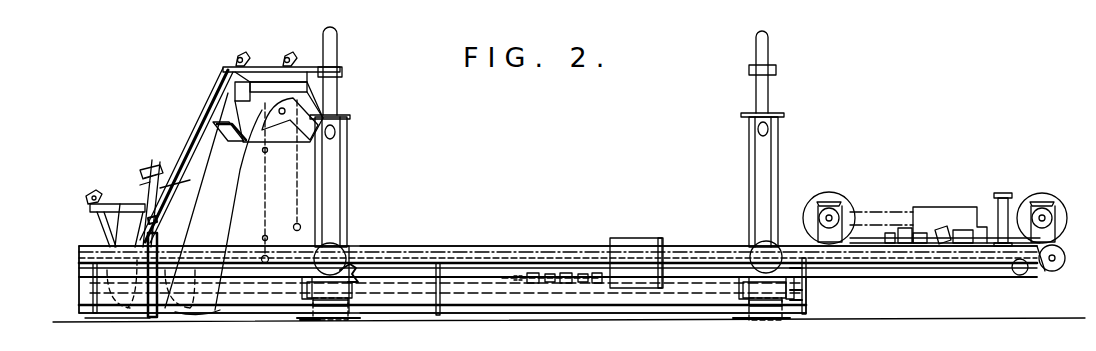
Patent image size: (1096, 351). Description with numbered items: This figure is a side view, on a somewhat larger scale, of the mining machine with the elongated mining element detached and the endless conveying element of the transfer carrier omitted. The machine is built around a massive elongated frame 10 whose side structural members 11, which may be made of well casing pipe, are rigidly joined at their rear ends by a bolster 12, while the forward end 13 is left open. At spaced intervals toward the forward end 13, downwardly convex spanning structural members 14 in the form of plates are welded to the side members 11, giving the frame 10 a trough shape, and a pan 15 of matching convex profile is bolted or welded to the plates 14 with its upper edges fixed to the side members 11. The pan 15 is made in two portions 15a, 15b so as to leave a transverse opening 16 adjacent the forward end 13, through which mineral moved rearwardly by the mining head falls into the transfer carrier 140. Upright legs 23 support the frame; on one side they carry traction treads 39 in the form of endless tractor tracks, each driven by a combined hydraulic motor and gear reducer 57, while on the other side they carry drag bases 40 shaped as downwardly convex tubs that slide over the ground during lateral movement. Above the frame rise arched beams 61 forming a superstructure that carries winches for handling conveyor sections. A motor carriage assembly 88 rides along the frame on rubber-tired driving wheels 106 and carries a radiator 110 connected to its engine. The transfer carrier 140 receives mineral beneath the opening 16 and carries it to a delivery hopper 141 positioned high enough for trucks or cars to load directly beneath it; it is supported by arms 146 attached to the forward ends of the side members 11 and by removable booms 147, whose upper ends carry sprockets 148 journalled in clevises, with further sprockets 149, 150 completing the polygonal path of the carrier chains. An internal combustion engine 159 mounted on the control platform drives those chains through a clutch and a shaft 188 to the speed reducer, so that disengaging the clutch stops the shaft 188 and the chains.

The elongated frame 10 is at (534, 242).
The side structural members 11 is at (477, 241).
The bolster 12 is at (1046, 272).
The forward end 13 is at (76, 280).
The spanning structural members 14 is at (89, 318).
The pan 15 is at (658, 306).
The forward pan portion 15a is at (121, 306).
The rear pan portion 15b is at (221, 326).
The transverse opening 16 is at (181, 326).
The upright legs 23 is at (344, 162).
The traction treads 39 is at (333, 320).
The drag bases 40 is at (307, 320).
The combined hydraulic motor and gear reducer 57 is at (347, 242).
The arched beams 61 is at (340, 76).
The motor carriage assembly 88 is at (937, 202).
The driving wheels 106 is at (840, 204).
The radiator 110 is at (1003, 187).
The transfer carrier 140 is at (245, 191).
The delivery hopper 141 is at (308, 92).
The arms 146 is at (134, 228).
The booms 147 is at (195, 120).
The sprockets 148 is at (281, 50).
The sprocket 149 is at (143, 164).
The sprocket 150 is at (99, 186).
The internal combustion engine 159 is at (647, 238).
The shaft 188 is at (514, 288).